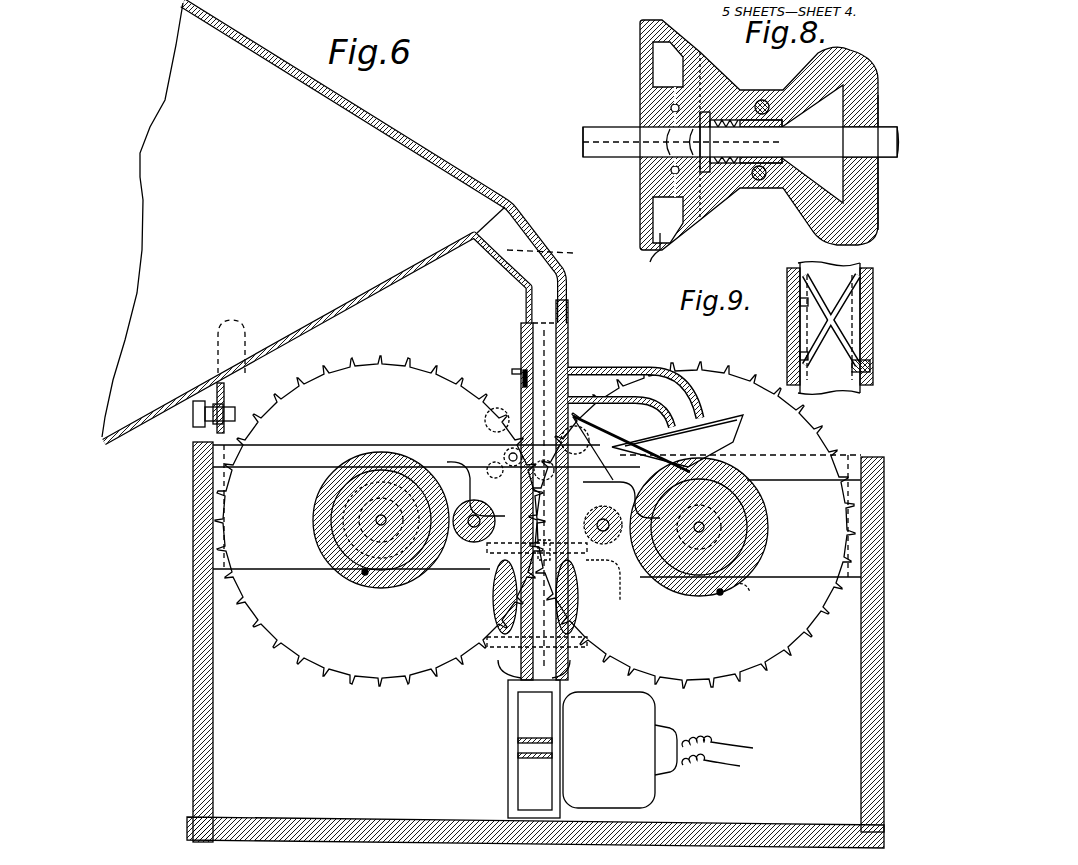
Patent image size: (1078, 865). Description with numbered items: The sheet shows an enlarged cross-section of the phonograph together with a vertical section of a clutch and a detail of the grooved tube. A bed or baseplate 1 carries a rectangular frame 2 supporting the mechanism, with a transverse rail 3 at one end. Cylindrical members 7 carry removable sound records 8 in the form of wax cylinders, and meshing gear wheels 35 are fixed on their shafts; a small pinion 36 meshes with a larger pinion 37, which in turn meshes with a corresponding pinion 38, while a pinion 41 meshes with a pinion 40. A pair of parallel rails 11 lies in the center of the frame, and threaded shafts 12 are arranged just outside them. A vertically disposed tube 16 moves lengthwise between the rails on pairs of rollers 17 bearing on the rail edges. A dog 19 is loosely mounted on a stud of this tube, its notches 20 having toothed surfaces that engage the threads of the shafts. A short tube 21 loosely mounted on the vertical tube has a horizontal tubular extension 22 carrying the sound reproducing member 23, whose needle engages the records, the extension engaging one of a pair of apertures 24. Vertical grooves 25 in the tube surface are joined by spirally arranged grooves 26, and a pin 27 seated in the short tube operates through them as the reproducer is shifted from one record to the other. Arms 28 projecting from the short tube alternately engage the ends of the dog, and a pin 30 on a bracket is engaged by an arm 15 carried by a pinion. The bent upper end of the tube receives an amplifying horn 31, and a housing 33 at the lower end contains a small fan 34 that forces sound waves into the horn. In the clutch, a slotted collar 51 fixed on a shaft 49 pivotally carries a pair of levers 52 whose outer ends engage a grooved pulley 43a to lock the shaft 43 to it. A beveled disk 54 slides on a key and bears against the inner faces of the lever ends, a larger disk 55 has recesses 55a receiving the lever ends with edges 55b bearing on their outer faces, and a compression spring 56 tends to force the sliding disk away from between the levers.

In FIG. 6, the bed or baseplate 1 is at (356, 838).
In FIG. 6, the rectangular frame 2 is at (193, 612).
In FIG. 6, the transverse rail 3 is at (537, 512).
In FIG. 6, the cylindrical members 7 is at (385, 502).
In FIG. 6, the sound records 8 is at (362, 580).
In FIG. 6, the rails 11 is at (496, 596).
In FIG. 6, the threaded shafts 12 is at (478, 545).
In FIG. 6, the arm 15 is at (500, 470).
In FIG. 6, the vertically disposed tube 16 is at (530, 683).
In FIG. 6, the rollers 17 is at (470, 575).
In FIG. 6, the dog 19 is at (495, 468).
In FIG. 6, the notches 20 is at (448, 462).
In FIG. 6, the short tube 21 is at (521, 336).
In FIG. 9, the short tube 21 is at (790, 283).
In FIG. 6, the horizontal tubular extension 22 is at (612, 368).
In FIG. 6, the sound reproducing member 23 is at (718, 425).
In FIG. 6, the apertures 24 is at (512, 372).
In FIG. 6, the vertical grooves 25 is at (520, 412).
In FIG. 9, the vertical grooves 25 is at (790, 333).
In FIG. 9, the spirally arranged grooves 26 is at (830, 300).
In FIG. 6, the pin 27 is at (620, 402).
In FIG. 9, the pin 27 is at (870, 372).
In FIG. 6, the arms 28 is at (631, 446).
In FIG. 6, the pin 30 is at (512, 412).
In FIG. 6, the amplifying horn 31 is at (398, 143).
In FIG. 6, the housing 33 is at (508, 780).
In FIG. 6, the fan 34 is at (522, 716).
In FIG. 6, the gear wheels 35 is at (305, 655).
In FIG. 6, the small pinion 36 is at (745, 520).
In FIG. 6, the larger pinion 37 is at (615, 584).
In FIG. 6, the pinion 38 is at (435, 578).
In FIG. 6, the pinion 40 is at (597, 431).
In FIG. 6, the pinion 41 is at (735, 585).
In FIG. 8, the shaft 43 is at (847, 147).
In FIG. 8, the grooved pulley 43a is at (870, 113).
In FIG. 8, the shaft 49 is at (630, 124).
In FIG. 8, the slotted collar 51 is at (782, 126).
In FIG. 8, the levers 52 is at (817, 228).
In FIG. 8, the disk 54 is at (647, 180).
In FIG. 8, the larger disk 55 is at (643, 65).
In FIG. 8, the recesses 55a is at (672, 256).
In FIG. 8, the edges 55b is at (690, 212).
In FIG. 8, the compression spring 56 is at (728, 118).